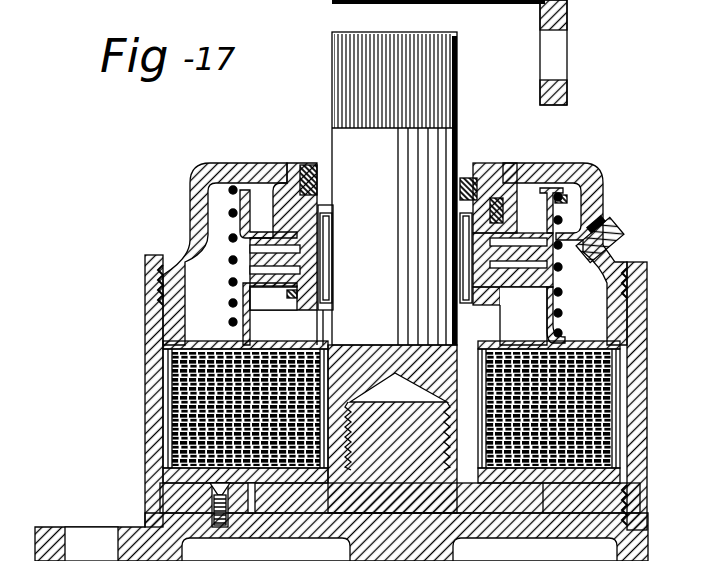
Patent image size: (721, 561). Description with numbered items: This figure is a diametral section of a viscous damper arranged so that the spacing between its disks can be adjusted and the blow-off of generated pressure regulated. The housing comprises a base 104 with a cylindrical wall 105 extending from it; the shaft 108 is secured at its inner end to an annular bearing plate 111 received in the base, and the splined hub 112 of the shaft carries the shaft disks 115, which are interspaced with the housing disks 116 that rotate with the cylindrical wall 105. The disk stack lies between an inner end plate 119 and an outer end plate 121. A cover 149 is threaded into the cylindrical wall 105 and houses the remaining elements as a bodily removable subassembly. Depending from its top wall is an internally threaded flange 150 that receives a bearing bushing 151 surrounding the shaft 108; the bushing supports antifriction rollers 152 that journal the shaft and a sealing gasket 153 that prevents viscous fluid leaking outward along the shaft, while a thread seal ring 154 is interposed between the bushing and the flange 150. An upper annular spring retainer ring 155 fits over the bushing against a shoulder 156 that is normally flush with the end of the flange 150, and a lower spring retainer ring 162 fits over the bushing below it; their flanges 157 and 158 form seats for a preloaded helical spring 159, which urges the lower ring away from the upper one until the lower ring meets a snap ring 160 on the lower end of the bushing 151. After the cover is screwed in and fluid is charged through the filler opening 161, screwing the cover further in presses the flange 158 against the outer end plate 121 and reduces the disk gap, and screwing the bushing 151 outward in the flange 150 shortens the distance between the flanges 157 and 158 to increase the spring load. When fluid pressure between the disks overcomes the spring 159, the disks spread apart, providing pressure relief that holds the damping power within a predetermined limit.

The base 104 is at (548, 540).
The cylindrical wall 105 is at (648, 410).
The shaft 108 is at (458, 90).
The annular bearing plate 111 is at (278, 538).
The hub 112 is at (465, 540).
The shaft disks 115 is at (333, 345).
The housing disks 116 is at (622, 384).
The inner end plate 119 is at (640, 478).
The outer end plate 121 is at (632, 352).
The cover 149 is at (600, 198).
The flange 150 is at (507, 215).
The bearing bushing 151 is at (486, 180).
The antifriction rollers 152 is at (333, 248).
The sealing gasket 153 is at (335, 190).
The thread seal ring 154 is at (500, 195).
The upper annular spring retainer ring 155 is at (568, 218).
The shoulder 156 is at (333, 218).
The flange 157 is at (552, 208).
The flange 158 is at (566, 340).
The helical spring 159 is at (562, 225).
The snap ring 160 is at (495, 303).
The filler opening 161 is at (618, 255).
The lower spring retainer ring 162 is at (558, 305).